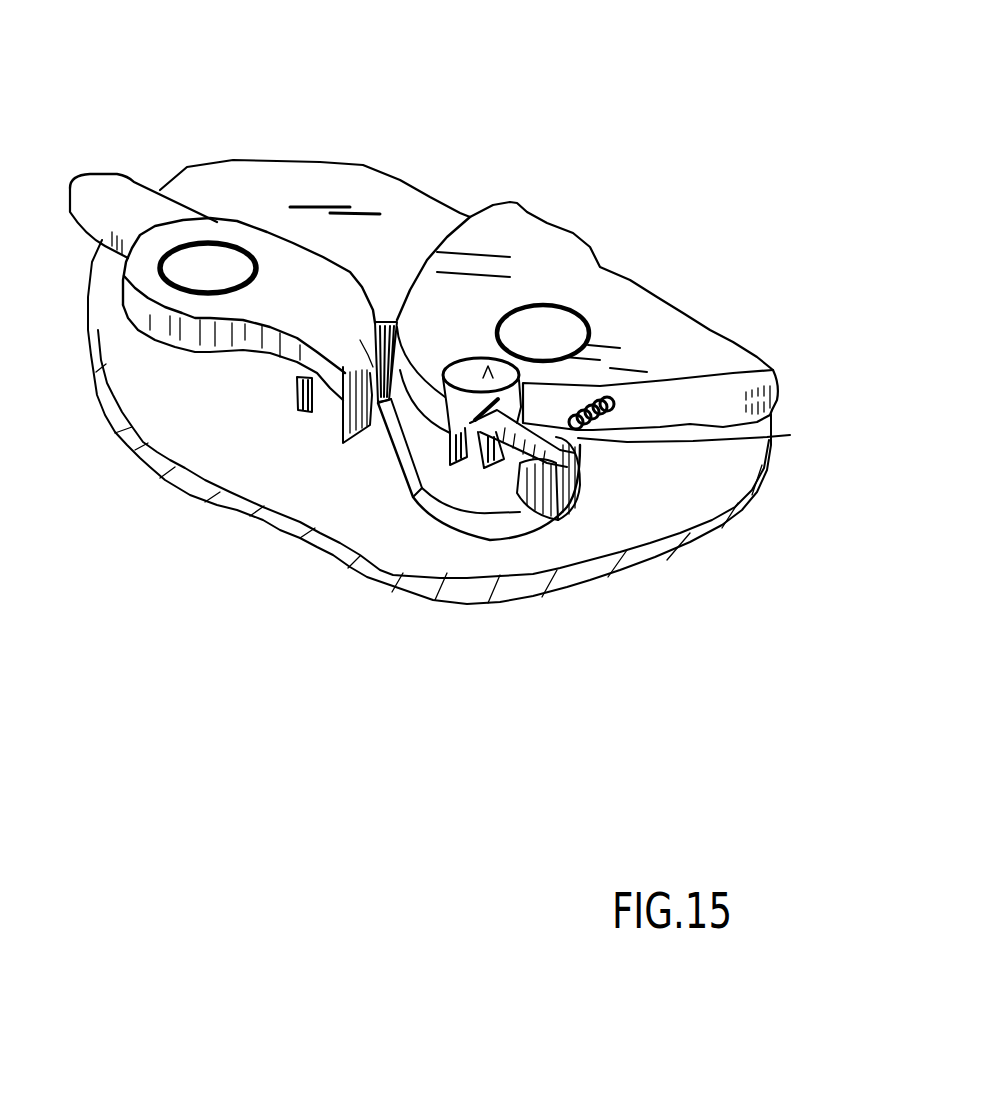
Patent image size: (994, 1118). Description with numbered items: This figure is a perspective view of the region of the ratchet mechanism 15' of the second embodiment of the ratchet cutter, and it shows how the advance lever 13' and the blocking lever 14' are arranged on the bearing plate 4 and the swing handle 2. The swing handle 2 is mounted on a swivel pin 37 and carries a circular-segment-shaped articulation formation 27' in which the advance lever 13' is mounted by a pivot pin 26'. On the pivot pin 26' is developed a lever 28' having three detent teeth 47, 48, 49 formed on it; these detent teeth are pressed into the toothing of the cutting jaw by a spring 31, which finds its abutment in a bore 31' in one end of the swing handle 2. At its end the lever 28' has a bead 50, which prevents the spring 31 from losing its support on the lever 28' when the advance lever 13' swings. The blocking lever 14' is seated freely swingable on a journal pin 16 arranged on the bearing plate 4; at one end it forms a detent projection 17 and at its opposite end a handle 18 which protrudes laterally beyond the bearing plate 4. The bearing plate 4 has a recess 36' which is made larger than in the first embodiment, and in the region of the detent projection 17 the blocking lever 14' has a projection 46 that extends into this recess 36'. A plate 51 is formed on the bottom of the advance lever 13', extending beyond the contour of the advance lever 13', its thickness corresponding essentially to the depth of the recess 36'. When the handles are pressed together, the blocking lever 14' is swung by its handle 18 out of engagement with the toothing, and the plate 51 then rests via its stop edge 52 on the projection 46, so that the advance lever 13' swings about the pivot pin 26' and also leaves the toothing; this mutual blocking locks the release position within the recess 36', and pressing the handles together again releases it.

The swing handle 2 is at (663, 327).
The bearing plate 4 is at (238, 190).
The advance lever 13' is at (671, 272).
The blocking lever 14' is at (342, 150).
The ratchet mechanism 15' is at (121, 384).
The journal pin 16 is at (212, 262).
The detent projection 17 is at (300, 376).
The handle 18 is at (103, 190).
The pivot pin 26' is at (579, 260).
The articulation formation 27' is at (506, 249).
The lever 28' is at (654, 550).
The spring 31 is at (720, 435).
The bore 31' is at (722, 381).
The recess 36' is at (350, 505).
The swivel pin 37 is at (547, 327).
The projection 46 is at (372, 421).
The detent tooth 47 is at (505, 480).
The detent tooth 48 is at (460, 445).
The detent tooth 49 is at (425, 438).
The bead 50 is at (560, 456).
The plate 51 is at (410, 437).
The stop edge 52 is at (391, 322).